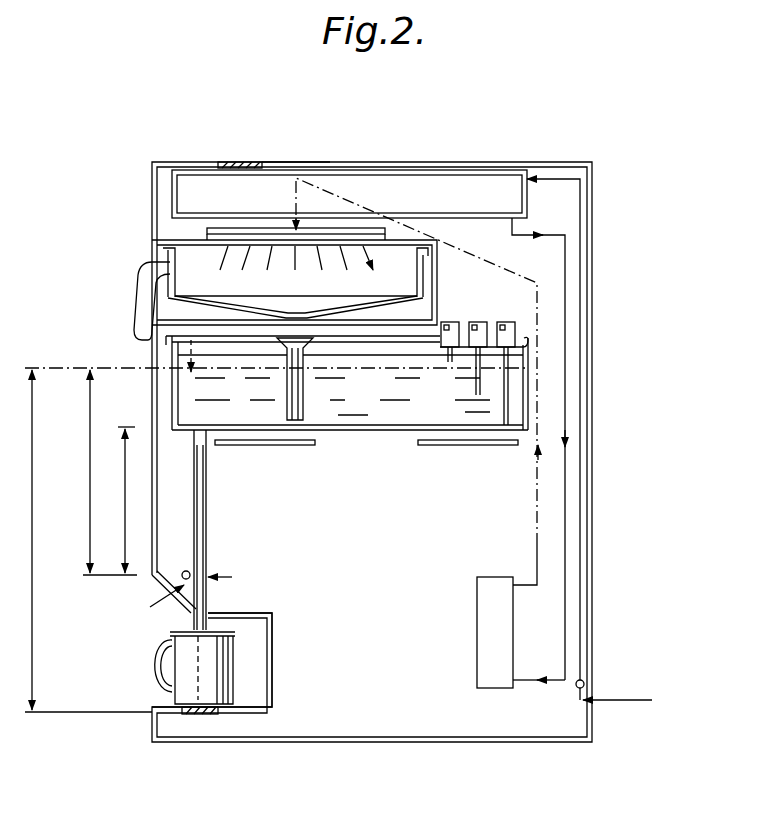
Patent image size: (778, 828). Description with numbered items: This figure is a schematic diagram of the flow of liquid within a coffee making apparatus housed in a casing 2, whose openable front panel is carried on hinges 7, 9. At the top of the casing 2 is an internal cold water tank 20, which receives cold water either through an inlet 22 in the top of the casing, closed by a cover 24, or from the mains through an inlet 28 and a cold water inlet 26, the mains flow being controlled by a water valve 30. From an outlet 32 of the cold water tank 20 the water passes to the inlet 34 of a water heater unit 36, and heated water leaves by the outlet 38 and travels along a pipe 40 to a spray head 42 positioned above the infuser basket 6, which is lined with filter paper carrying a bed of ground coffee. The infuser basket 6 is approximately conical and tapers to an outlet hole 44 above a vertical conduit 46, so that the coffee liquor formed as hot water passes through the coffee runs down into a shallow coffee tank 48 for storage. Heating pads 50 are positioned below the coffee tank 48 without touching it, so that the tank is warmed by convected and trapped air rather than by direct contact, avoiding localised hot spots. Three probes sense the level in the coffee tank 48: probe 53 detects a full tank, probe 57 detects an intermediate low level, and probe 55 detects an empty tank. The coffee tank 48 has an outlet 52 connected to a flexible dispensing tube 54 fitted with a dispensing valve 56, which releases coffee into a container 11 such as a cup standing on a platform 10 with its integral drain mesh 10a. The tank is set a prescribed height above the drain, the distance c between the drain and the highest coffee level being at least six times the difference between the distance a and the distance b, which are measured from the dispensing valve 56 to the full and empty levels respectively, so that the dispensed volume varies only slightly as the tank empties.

The casing 2 is at (600, 159).
The infuser basket 6 is at (193, 278).
The hinge 7 is at (172, 365).
The hinge 9 is at (180, 575).
The platform 10 is at (243, 714).
The drain mesh 10a is at (202, 714).
The container 11 is at (193, 678).
The cold water tank 20 is at (452, 183).
The inlet 22 is at (263, 163).
The cover 24 is at (235, 161).
The cold water inlet 26 is at (537, 178).
The inlet 28 is at (640, 702).
The water valve 30 is at (584, 681).
The outlet 32 is at (515, 225).
The inlet 34 is at (522, 685).
The water heater unit 36 is at (485, 627).
The outlet 38 is at (517, 580).
The pipe 40 is at (540, 308).
The spray head 42 is at (212, 234).
The outlet hole 44 is at (295, 311).
The vertical conduit 46 is at (303, 377).
The coffee tank 48 is at (347, 383).
The heating pads 50 is at (303, 442).
The outlet 52 is at (202, 443).
The probe 53 is at (443, 352).
The flexible dispensing tube 54 is at (205, 518).
The probe 55 is at (503, 405).
The dispensing valve 56 is at (150, 602).
The probe 57 is at (475, 385).
The distance a is at (101, 472).
The distance b is at (118, 500).
The distance C c is at (80, 541).